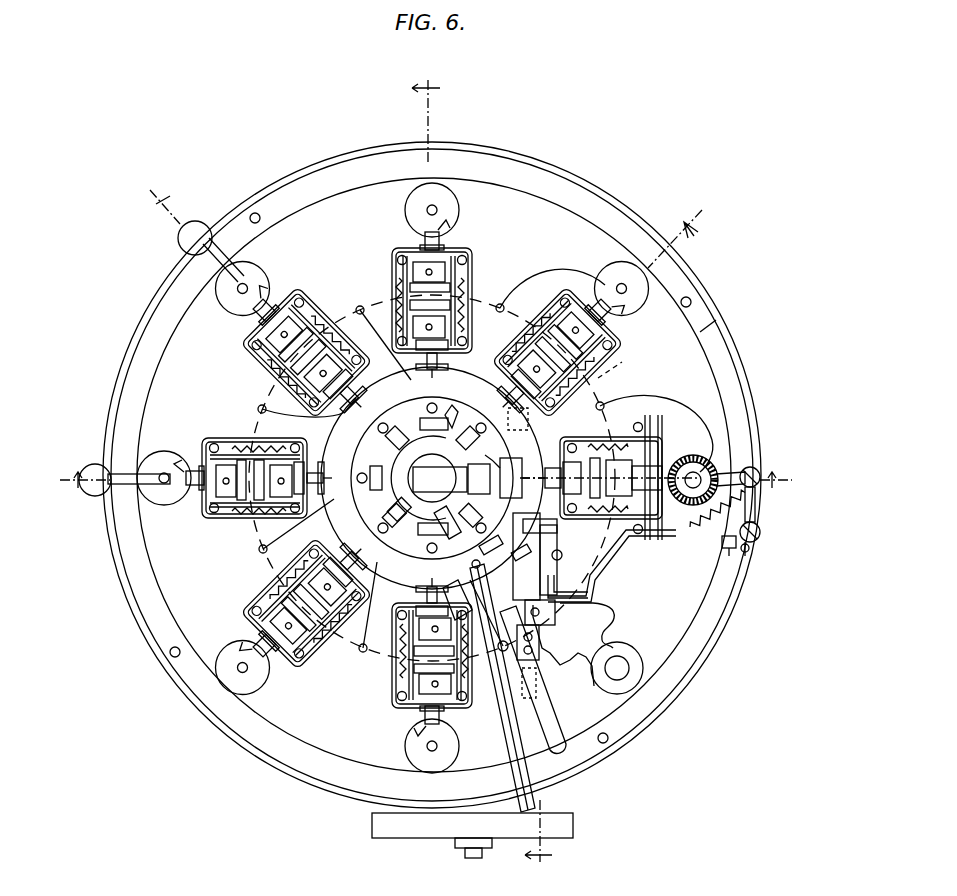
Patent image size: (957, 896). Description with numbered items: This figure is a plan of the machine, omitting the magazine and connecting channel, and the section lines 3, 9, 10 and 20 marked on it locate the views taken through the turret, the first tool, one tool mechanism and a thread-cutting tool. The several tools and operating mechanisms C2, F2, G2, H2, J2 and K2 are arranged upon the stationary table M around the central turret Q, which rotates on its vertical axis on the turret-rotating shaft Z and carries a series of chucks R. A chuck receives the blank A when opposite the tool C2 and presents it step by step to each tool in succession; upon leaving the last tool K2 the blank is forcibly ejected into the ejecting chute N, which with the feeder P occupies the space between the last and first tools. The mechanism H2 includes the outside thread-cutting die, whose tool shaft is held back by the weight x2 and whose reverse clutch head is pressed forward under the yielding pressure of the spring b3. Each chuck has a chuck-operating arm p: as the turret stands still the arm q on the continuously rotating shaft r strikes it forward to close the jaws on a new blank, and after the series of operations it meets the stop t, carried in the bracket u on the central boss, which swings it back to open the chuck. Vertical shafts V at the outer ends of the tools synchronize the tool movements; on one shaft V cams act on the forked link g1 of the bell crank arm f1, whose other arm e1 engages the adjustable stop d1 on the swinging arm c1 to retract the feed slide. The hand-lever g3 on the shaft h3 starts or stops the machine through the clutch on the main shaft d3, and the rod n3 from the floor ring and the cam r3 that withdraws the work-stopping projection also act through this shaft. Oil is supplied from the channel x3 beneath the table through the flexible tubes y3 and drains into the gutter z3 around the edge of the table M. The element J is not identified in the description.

The section line 3 3 is at (482, 468).
The section line 9 9 is at (419, 480).
The section line 10 is at (682, 224).
The section line 20 is at (152, 198).
The blank A is at (432, 480).
The turret-rotating shaft Z is at (422, 478).
The turret Q is at (441, 422).
The bracket u is at (369, 471).
The arm q is at (482, 479).
The shaft r is at (502, 452).
The chuck R is at (522, 475).
The chuck-operating arm p is at (417, 520).
The stop t is at (451, 531).
The tool and operating mechanism G2 is at (435, 280).
The tool and operating mechanism F2 is at (571, 338).
The outside thread-cutting die mechanism H2 is at (292, 338).
The tool and operating mechanism J2 is at (234, 471).
The last tool K2 is at (425, 675).
The first tool C2 is at (447, 565).
The vertical shaft V is at (706, 478).
The forked link g1 is at (758, 470).
The bell crank arm f1 is at (756, 518).
The bell crank arm e1 is at (748, 552).
The adjustable stop d1 is at (722, 548).
The swinging arm c1 is at (600, 587).
The feeder P is at (568, 584).
The slide block J is at (537, 586).
The ejecting chute N is at (501, 686).
The hand-lever g3 is at (545, 695).
The spring b3 is at (468, 607).
The shaft h3 is at (492, 624).
The rod n3 is at (491, 547).
The cam r3 is at (521, 553).
The flexible tubes y3 is at (368, 300).
The oil channel x3 is at (530, 402).
The stationary table M is at (630, 357).
The gutter z3 is at (710, 318).
The weight x2 is at (206, 214).
The main shaft d3 is at (462, 856).